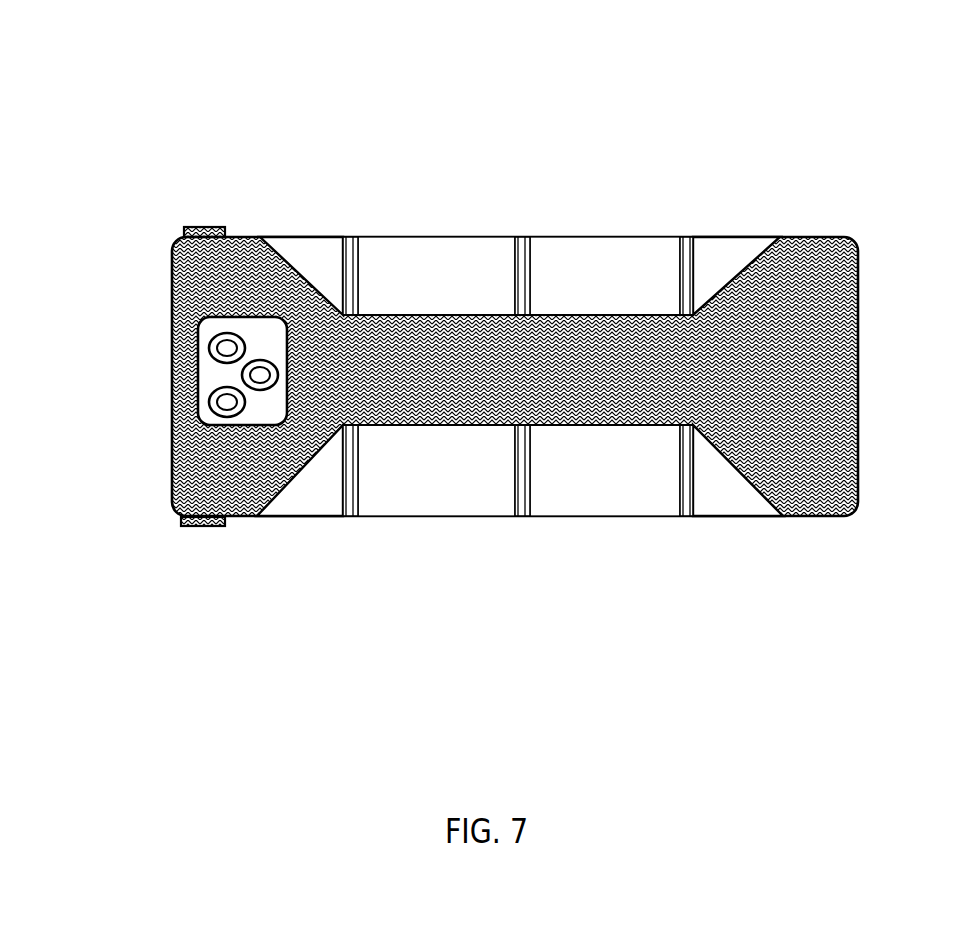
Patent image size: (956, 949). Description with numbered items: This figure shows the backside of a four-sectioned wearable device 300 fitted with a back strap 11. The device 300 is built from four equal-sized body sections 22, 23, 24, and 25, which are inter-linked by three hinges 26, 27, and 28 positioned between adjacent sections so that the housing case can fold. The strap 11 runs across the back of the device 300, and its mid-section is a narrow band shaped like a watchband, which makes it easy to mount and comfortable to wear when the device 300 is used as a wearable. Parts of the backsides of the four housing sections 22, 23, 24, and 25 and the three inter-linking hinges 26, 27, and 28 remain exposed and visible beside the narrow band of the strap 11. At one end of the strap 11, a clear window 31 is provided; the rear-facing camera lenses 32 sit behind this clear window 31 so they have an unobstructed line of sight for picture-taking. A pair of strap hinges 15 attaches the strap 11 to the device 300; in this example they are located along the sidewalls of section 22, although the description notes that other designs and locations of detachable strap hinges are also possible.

The device 300 is at (151, 64).
The strap 11 is at (437, 317).
The strap hinges 15 is at (183, 231).
The body section 22 is at (290, 233).
The body section 23 is at (402, 233).
The body section 24 is at (581, 233).
The body section 25 is at (728, 233).
The hinge 26 is at (352, 233).
The hinge 27 is at (523, 233).
The hinge 28 is at (686, 233).
The clear window 31 is at (172, 352).
The lenses 32 is at (207, 405).